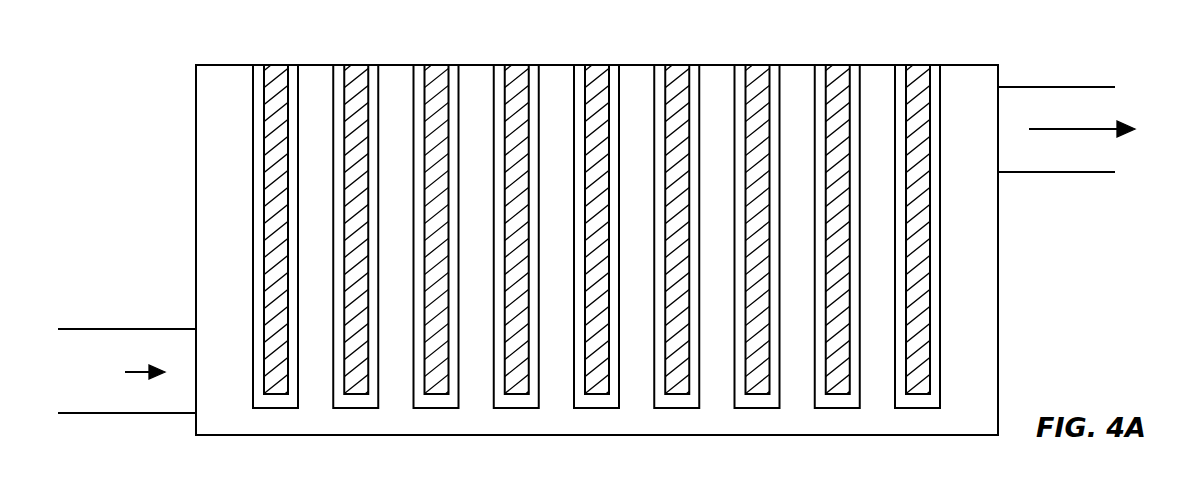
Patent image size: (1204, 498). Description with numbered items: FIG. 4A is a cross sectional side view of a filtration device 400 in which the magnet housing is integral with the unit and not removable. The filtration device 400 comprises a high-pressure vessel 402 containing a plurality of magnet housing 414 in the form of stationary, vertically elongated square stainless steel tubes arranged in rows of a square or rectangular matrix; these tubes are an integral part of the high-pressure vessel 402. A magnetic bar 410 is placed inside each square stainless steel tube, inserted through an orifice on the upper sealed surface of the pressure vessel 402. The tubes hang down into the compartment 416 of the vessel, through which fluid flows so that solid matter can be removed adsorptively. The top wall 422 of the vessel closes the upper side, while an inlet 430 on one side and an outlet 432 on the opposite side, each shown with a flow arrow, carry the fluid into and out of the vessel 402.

The filtration device 400 is at (1030, 256).
The high-pressure vessel 402 is at (999, 355).
The magnetic bar 410 is at (280, 65).
The magnet housing 414 is at (252, 112).
The compartment 416 is at (224, 203).
The top wall 422 is at (960, 64).
The inlet 430 is at (167, 329).
The outlet 432 is at (1017, 86).